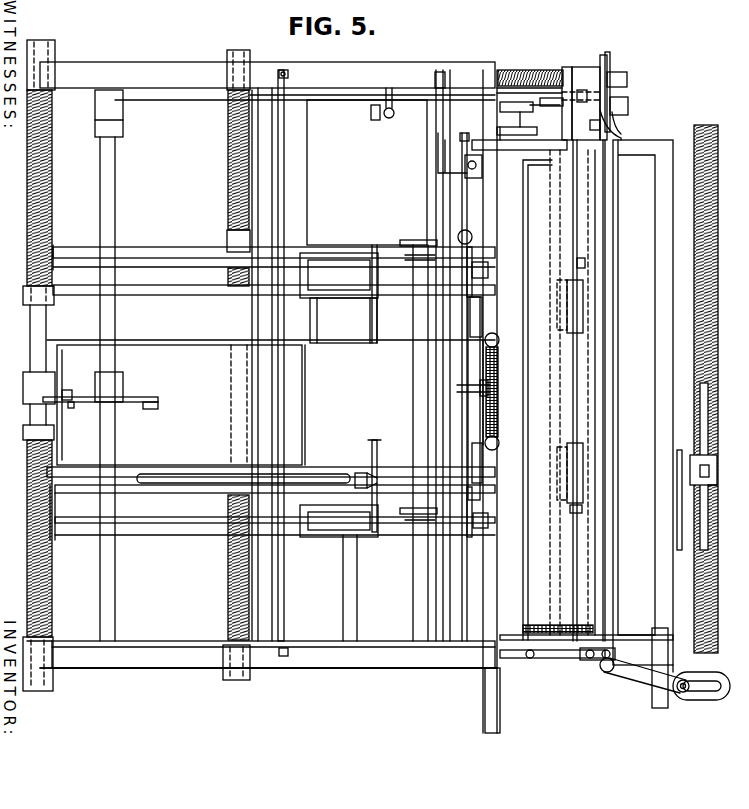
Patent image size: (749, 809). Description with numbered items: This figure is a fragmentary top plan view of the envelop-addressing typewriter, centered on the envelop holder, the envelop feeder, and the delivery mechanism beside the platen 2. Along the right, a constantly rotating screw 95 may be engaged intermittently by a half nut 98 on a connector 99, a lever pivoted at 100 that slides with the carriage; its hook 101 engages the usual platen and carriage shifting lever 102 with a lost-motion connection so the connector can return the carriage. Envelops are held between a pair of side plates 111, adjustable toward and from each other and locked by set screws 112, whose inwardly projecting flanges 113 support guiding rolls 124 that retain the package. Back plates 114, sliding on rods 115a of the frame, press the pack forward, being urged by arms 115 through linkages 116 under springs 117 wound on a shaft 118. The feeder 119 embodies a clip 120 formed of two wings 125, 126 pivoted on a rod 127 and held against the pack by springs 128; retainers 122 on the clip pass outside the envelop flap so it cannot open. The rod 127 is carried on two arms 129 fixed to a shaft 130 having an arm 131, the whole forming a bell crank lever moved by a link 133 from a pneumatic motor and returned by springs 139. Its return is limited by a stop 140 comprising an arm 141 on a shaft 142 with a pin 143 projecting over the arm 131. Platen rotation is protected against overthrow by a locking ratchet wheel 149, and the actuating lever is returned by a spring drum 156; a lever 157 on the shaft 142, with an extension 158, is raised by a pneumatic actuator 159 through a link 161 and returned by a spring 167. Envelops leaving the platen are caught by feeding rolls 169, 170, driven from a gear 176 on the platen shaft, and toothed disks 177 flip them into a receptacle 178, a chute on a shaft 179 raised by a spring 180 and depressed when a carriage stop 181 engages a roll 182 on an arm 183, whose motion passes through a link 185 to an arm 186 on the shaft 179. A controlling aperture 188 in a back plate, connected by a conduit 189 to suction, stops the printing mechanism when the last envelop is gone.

The platen 2 is at (525, 557).
The screw 95 is at (716, 338).
The half nut 98 is at (680, 451).
The connector 99 is at (722, 466).
The pivot 100 is at (708, 490).
The hook 101 is at (712, 699).
The platen and carriage shifting lever 102 is at (635, 677).
The side plates 111 is at (398, 246).
The set screws 112 is at (466, 234).
The flanges 113 is at (475, 296).
The back plates 114 is at (377, 322).
The arms 115 is at (289, 74).
The rods 115a is at (178, 294).
The linkages 116 is at (308, 248).
The springs 117 is at (229, 174).
The shaft 118 is at (237, 317).
The feeder 119 is at (376, 669).
The clip 120 is at (469, 426).
The retainers 122 is at (460, 393).
The guiding rolls 124 is at (486, 279).
The wing 125 is at (481, 317).
The wing 126 is at (483, 471).
The rod 127 is at (498, 236).
The springs 128 is at (492, 383).
The arms 129 is at (393, 64).
The shaft 130 is at (45, 326).
The arm 131 is at (138, 398).
The link 133 is at (157, 409).
The springs 139 is at (50, 201).
The stop 140 is at (120, 376).
The arm 141 is at (60, 387).
The shaft 142 is at (116, 430).
The pin 143 is at (72, 408).
The locking ratchet wheel 149 is at (563, 55).
The spring drum 156 is at (562, 118).
The lever 157 is at (150, 98).
The extension 158 is at (500, 108).
The pneumatic actuator 159 is at (367, 370).
The link 161 is at (371, 112).
The spring 167 is at (392, 117).
The feeding rolls 169 is at (558, 311).
The feeding rolls 170 is at (578, 298).
The gear 176 is at (523, 628).
The toothed disks 177 is at (583, 266).
The receptacle 178 is at (616, 371).
The shaft 179 is at (622, 76).
The spring 180 is at (549, 68).
The stop 181 is at (630, 128).
The roll 182 is at (630, 106).
The arm 183 is at (602, 115).
The link 185 is at (611, 59).
The arm 186 is at (593, 94).
The controlling aperture 188 is at (372, 479).
The conduit 189 is at (320, 478).